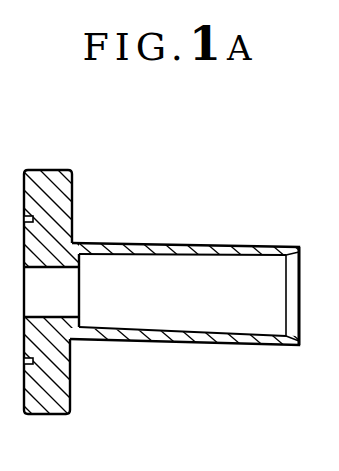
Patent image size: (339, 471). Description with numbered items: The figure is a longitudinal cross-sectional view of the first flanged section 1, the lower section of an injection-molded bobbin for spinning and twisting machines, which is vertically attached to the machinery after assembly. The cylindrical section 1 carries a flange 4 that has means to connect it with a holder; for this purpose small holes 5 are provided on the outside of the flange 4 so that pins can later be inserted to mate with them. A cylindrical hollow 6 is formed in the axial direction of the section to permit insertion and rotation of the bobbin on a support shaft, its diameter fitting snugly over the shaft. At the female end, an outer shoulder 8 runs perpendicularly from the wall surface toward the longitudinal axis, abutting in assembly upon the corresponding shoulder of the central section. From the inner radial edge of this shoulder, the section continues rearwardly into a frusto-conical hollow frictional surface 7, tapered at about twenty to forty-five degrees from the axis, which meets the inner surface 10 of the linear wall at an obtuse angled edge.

The first flanged section 1 is at (150, 230).
The flange 4 is at (68, 413).
The small holes 5 is at (33, 219).
The cylindrical hollow 6 is at (47, 288).
The frusto-conical hollow frictional surface 7 is at (297, 247).
The outer shoulder 8 is at (302, 248).
The inner surface 10 is at (275, 248).